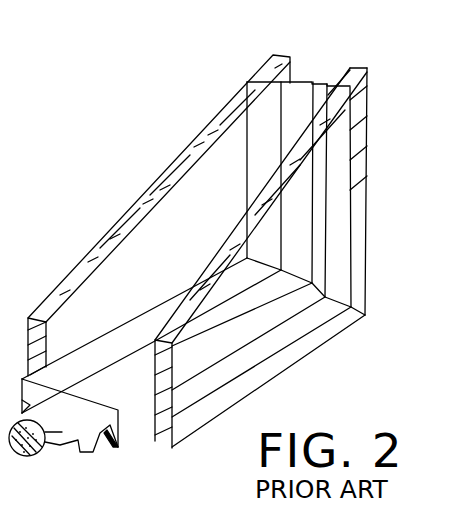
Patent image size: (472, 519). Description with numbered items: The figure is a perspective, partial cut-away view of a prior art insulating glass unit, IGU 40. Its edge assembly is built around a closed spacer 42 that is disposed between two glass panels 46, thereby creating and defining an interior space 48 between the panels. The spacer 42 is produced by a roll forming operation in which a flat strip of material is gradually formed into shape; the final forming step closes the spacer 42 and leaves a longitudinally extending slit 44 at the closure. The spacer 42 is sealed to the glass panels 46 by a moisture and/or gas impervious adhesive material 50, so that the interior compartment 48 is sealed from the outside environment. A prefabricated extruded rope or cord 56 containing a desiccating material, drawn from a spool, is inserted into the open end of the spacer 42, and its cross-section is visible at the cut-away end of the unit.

The IGU 40 is at (369, 196).
The closed spacer 42 is at (304, 173).
The longitudinally extending slit 44 is at (287, 103).
The glass panels 46 is at (160, 185).
The interior space 48 is at (134, 261).
The adhesive material 50 is at (337, 293).
The rope or cord 56 is at (47, 428).